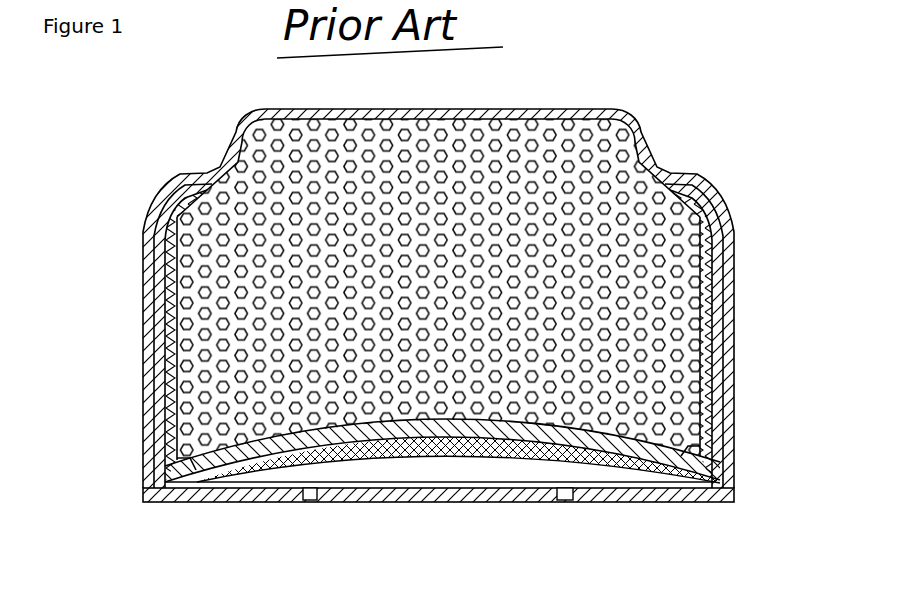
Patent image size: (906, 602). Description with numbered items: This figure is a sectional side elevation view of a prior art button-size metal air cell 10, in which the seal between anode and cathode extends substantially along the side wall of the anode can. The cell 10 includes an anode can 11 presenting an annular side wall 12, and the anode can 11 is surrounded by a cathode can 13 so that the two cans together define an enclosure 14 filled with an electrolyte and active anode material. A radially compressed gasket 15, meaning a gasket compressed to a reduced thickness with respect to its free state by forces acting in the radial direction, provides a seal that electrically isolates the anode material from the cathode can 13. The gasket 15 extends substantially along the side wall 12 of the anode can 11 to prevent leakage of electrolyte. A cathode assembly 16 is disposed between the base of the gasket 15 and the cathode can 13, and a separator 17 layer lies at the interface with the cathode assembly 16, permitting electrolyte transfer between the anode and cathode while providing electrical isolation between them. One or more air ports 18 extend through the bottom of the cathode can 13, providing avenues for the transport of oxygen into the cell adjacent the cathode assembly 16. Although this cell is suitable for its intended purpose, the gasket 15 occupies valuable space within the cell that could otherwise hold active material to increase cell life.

The button-size metal air cell 10 is at (667, 84).
The anode can 11 is at (503, 100).
The annular side wall 12 is at (695, 288).
The cathode can 13 is at (476, 506).
The enclosure 14 is at (610, 153).
The radially compressed gasket 15 is at (722, 365).
The cathode assembly 16 is at (347, 476).
The separator 17 is at (403, 432).
The air ports 18 is at (312, 504).